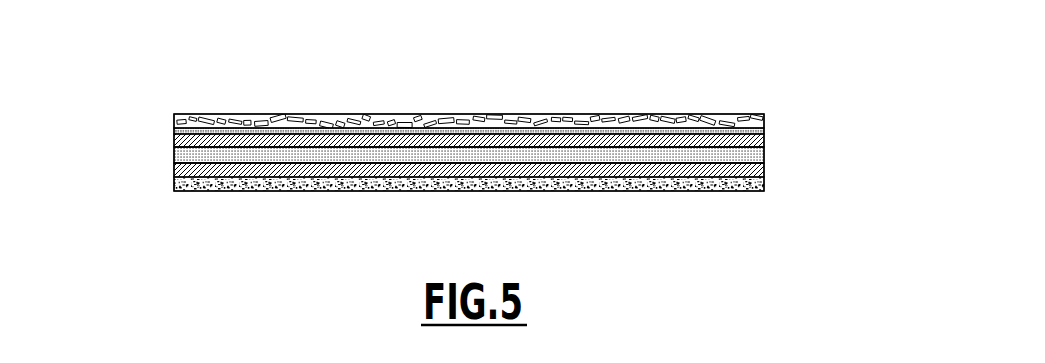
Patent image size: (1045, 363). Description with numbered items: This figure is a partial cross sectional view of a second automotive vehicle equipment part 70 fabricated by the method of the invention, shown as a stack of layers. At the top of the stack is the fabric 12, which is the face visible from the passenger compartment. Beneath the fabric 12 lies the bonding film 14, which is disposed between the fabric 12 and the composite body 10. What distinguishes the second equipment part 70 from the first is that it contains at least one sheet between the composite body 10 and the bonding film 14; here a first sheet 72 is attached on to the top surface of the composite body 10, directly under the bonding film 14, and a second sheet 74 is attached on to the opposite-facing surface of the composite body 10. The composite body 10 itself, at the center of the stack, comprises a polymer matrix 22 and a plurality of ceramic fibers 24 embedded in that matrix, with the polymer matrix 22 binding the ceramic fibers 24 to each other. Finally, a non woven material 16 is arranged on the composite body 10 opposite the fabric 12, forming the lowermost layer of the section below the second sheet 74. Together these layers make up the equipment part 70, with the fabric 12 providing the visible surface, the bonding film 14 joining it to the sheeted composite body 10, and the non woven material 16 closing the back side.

The second automotive vehicle equipment part 70 is at (141, 92).
The fabric 12 is at (758, 111).
The bonding film 14 is at (766, 131).
The first sheet 72 is at (767, 140).
The composite body 10 is at (767, 155).
The second sheet 74 is at (767, 170).
The non woven material 16 is at (768, 185).
The ceramic fibers 24 is at (199, 156).
The polymer matrix 22 is at (300, 160).